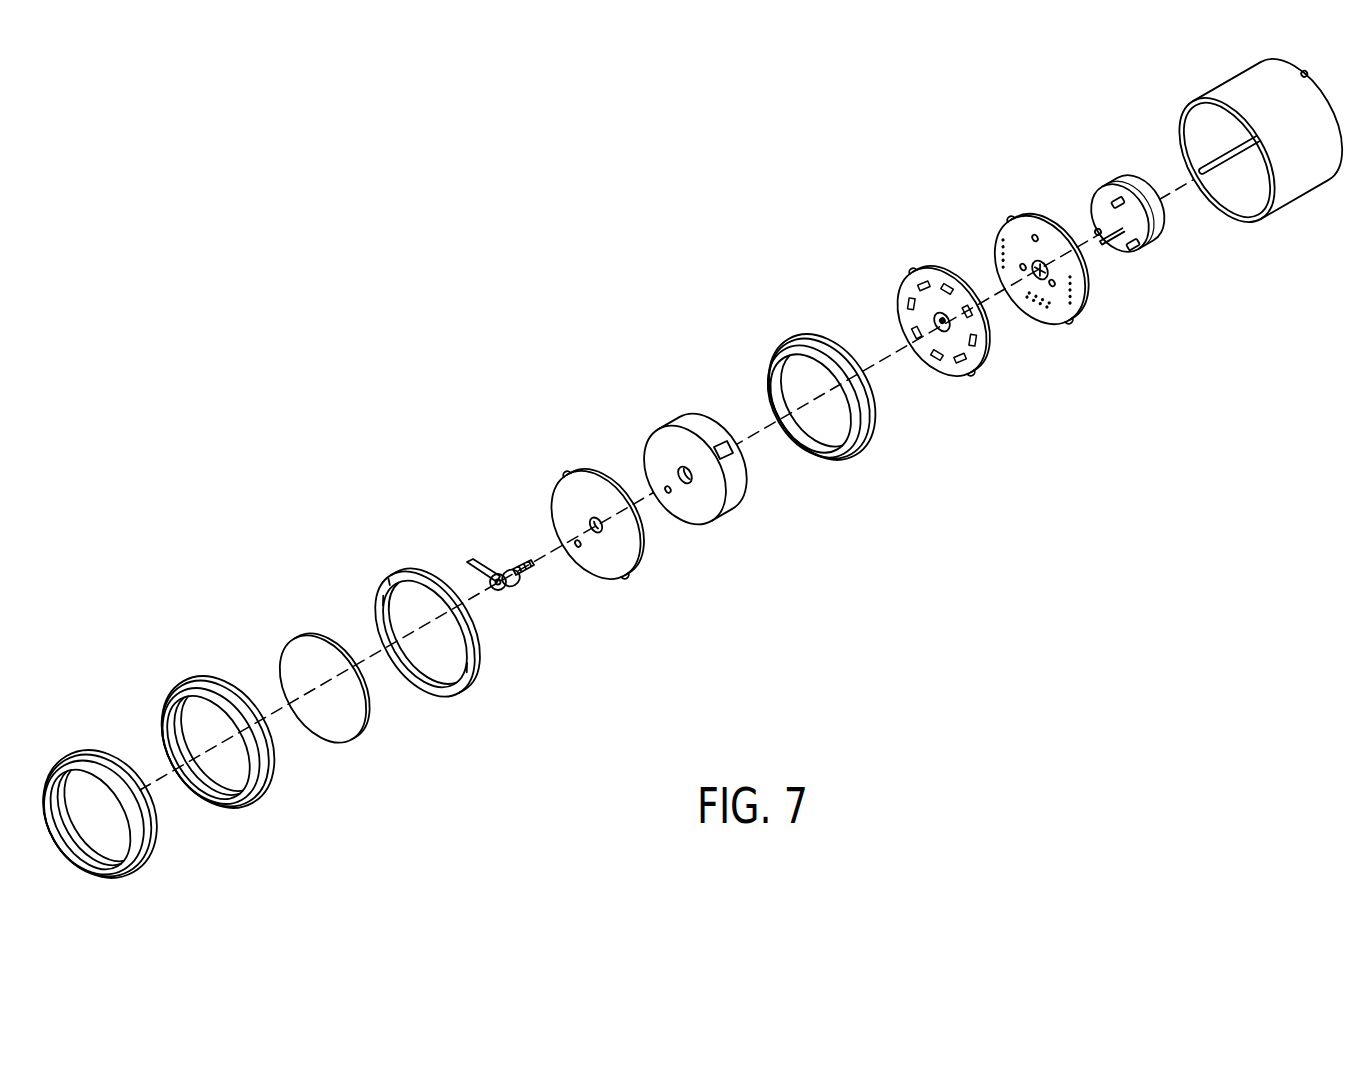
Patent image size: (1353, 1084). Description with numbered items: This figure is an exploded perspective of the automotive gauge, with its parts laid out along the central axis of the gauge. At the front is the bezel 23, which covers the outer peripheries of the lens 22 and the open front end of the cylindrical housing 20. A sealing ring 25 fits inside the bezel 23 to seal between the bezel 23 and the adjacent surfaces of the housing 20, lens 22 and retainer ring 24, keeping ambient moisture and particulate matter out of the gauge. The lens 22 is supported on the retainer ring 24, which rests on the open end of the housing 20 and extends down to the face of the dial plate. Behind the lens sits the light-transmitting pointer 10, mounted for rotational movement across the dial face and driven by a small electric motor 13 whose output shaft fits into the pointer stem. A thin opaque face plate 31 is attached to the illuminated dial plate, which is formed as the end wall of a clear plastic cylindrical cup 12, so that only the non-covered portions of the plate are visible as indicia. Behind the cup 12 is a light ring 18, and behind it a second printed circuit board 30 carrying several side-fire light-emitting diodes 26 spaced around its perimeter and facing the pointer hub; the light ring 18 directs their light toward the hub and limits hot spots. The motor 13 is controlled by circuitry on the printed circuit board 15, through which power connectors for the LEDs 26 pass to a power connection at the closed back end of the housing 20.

The light-transmitting pointer 10 is at (515, 593).
The cylindrical cup 12 is at (728, 515).
The electric motor 13 is at (1153, 245).
The printed circuit board 15 is at (1060, 325).
The light ring 18 is at (857, 455).
The cylindrical housing 20 is at (1305, 176).
The lens 22 is at (349, 743).
The bezel 23 is at (150, 858).
The retainer ring 24 is at (452, 700).
The sealing ring 25 is at (262, 800).
The side-fire light-emitting diodes 26 is at (918, 280).
The second printed circuit board 30 is at (982, 365).
The opaque face plate 31 is at (617, 579).